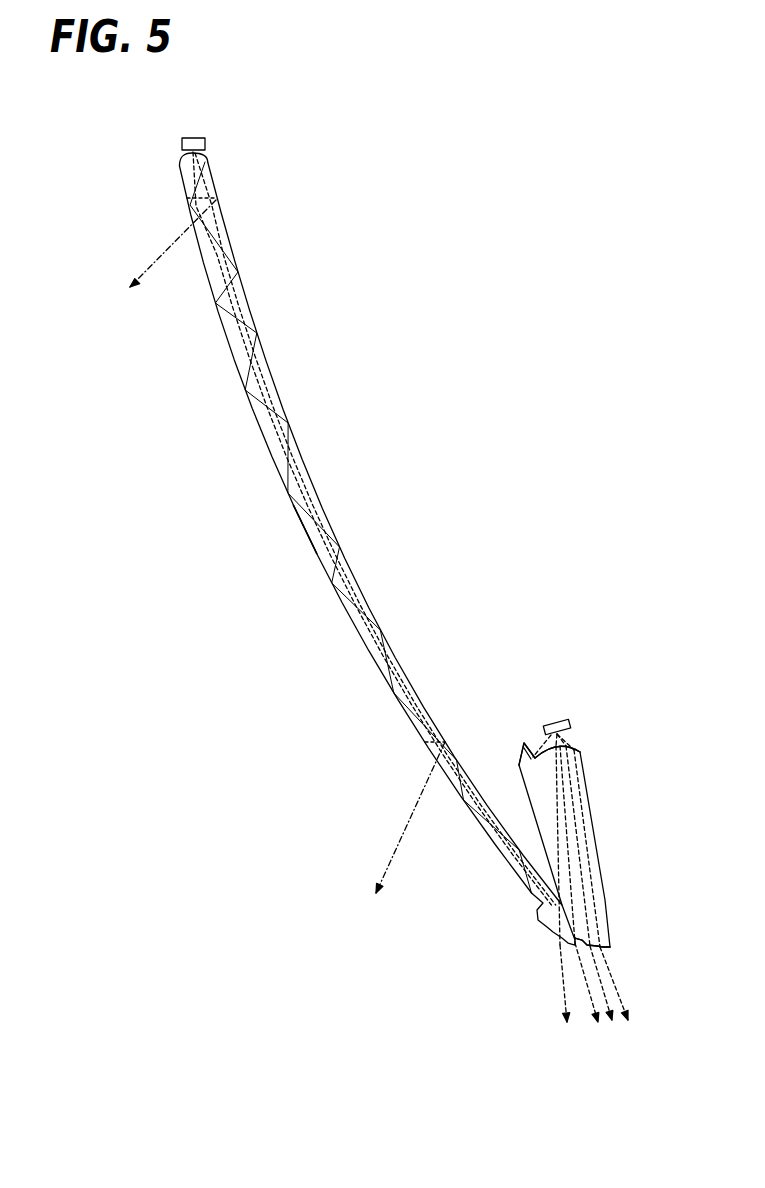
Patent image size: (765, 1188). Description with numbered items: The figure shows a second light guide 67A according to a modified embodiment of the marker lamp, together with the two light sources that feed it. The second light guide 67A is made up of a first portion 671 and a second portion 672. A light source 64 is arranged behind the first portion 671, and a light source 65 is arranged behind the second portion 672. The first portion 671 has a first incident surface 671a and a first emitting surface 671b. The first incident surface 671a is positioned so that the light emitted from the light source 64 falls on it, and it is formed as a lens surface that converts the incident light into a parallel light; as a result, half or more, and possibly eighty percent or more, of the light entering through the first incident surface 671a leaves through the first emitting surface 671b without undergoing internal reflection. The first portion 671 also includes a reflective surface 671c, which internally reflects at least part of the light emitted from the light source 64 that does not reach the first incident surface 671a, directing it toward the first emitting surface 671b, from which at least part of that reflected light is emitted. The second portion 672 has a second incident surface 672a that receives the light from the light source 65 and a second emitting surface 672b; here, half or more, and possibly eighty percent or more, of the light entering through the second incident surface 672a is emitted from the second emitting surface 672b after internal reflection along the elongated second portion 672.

The second light guide 67A is at (507, 373).
The light source 64 is at (557, 720).
The light source 65 is at (196, 137).
The first portion 671 is at (610, 843).
The first incident surface 671a is at (581, 750).
The first emitting surface 671b is at (611, 948).
The reflective surface 671c is at (521, 746).
The second portion 672 is at (349, 524).
The second incident surface 672a is at (178, 158).
The second emitting surface 672b is at (303, 531).